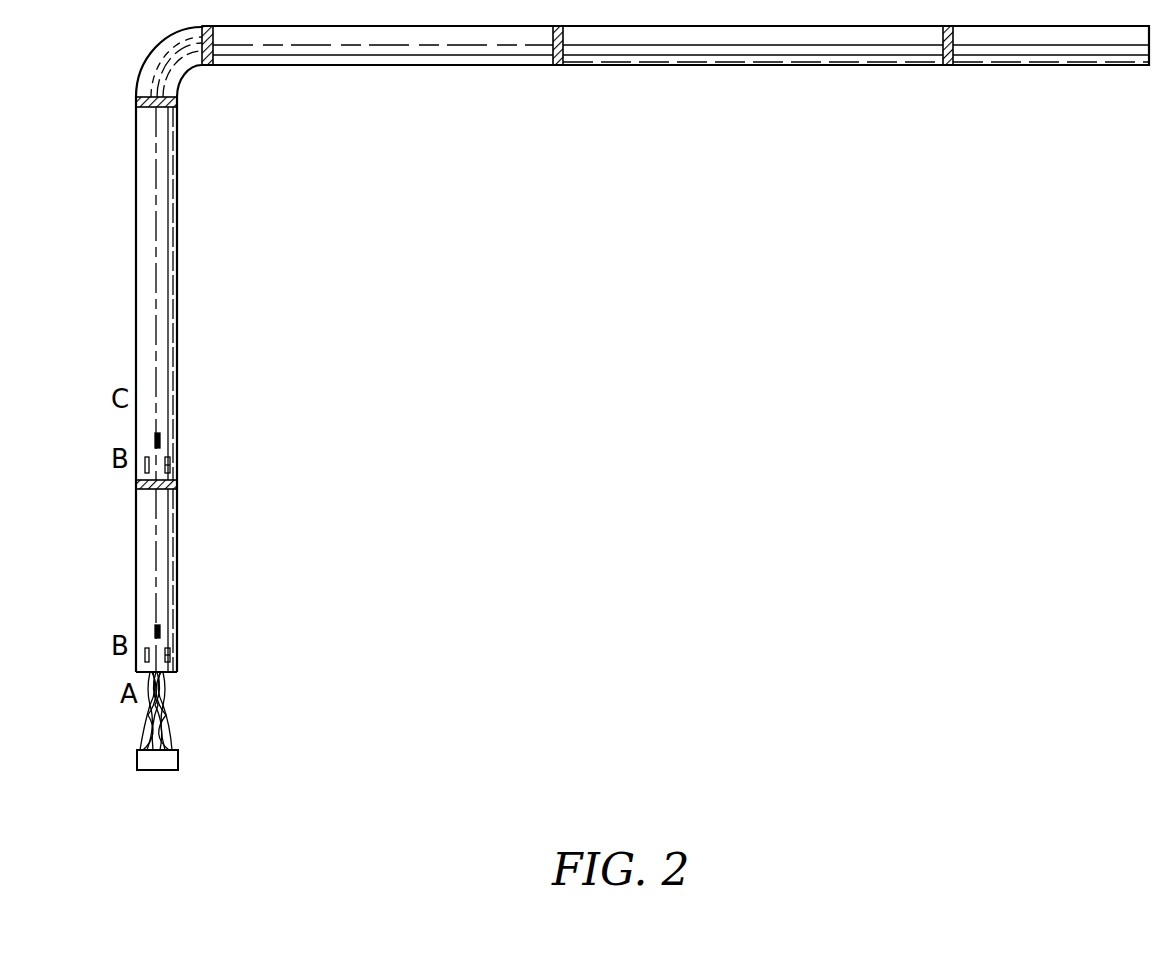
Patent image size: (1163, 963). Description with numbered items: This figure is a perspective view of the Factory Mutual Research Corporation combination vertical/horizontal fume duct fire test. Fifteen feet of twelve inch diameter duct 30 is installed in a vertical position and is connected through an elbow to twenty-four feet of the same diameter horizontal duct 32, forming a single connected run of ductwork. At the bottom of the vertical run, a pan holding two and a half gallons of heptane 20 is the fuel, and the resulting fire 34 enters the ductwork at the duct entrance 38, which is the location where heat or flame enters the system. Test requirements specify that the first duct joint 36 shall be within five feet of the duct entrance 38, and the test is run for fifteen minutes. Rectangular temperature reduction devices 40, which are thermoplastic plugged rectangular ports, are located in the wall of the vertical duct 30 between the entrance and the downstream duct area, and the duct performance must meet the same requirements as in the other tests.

The heptane 20 is at (170, 760).
The duct 30 is at (171, 270).
The horizontal duct 32 is at (740, 52).
The fire 34 is at (170, 715).
The first duct joint 36 is at (177, 481).
The duct entrance 38 is at (204, 667).
The rectangular temperature reduction devices 40 is at (160, 440).